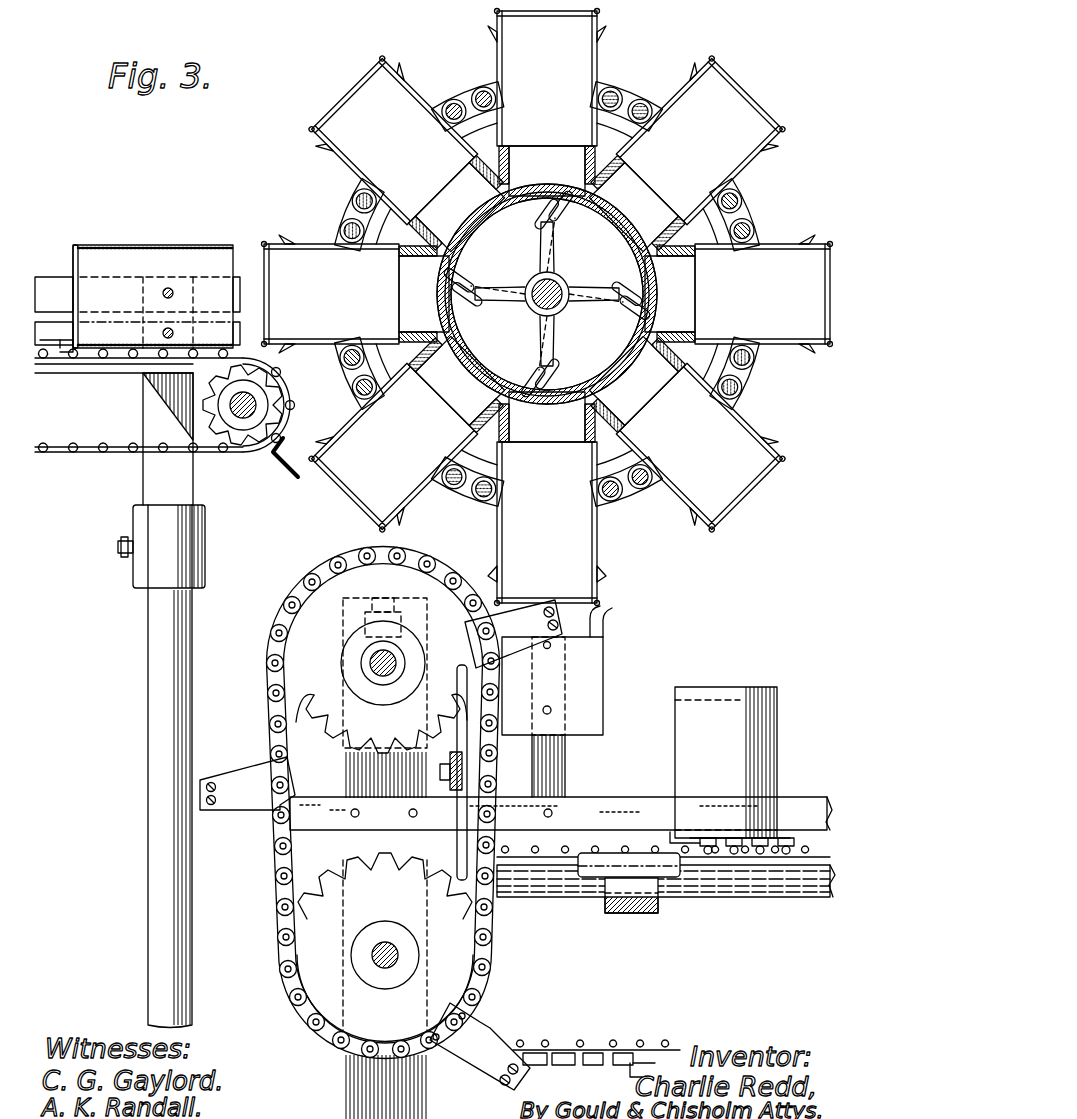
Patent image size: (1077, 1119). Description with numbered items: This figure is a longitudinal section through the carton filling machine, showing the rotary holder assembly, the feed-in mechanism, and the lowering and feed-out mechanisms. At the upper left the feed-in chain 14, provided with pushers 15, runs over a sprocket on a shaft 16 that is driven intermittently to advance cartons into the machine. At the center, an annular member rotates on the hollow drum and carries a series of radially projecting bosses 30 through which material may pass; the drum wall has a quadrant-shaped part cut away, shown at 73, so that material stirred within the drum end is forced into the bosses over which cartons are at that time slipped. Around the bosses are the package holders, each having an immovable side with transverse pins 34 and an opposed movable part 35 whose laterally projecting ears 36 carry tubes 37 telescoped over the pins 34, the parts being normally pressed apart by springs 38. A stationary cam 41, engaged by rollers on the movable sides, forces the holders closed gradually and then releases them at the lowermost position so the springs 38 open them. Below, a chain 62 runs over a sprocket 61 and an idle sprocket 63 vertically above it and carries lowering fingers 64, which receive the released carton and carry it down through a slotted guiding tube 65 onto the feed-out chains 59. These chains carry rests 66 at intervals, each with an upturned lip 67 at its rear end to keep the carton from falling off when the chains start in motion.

The feed-in chain 14 is at (118, 372).
The pushers 15 is at (294, 478).
The shaft 16 is at (243, 420).
The radially projecting bosses 30 is at (530, 375).
The transverse pins 34 is at (368, 232).
The movable parts 35 is at (547, 307).
The laterally projecting ears 36 is at (470, 500).
The tubes 37 is at (345, 226).
The springs 38 is at (342, 232).
The cam 41 is at (437, 392).
The feed-out chains 59 is at (602, 1047).
The sprocket 61 is at (385, 986).
The chain 62 is at (492, 942).
The idle sprocket 63 is at (381, 698).
The lowering fingers 64 is at (500, 1040).
The guiding tube 65 is at (592, 665).
The rests 66 is at (548, 1052).
The upturned lip 67 is at (612, 1070).
The quadrant-shaped cut-away part 73 is at (640, 348).